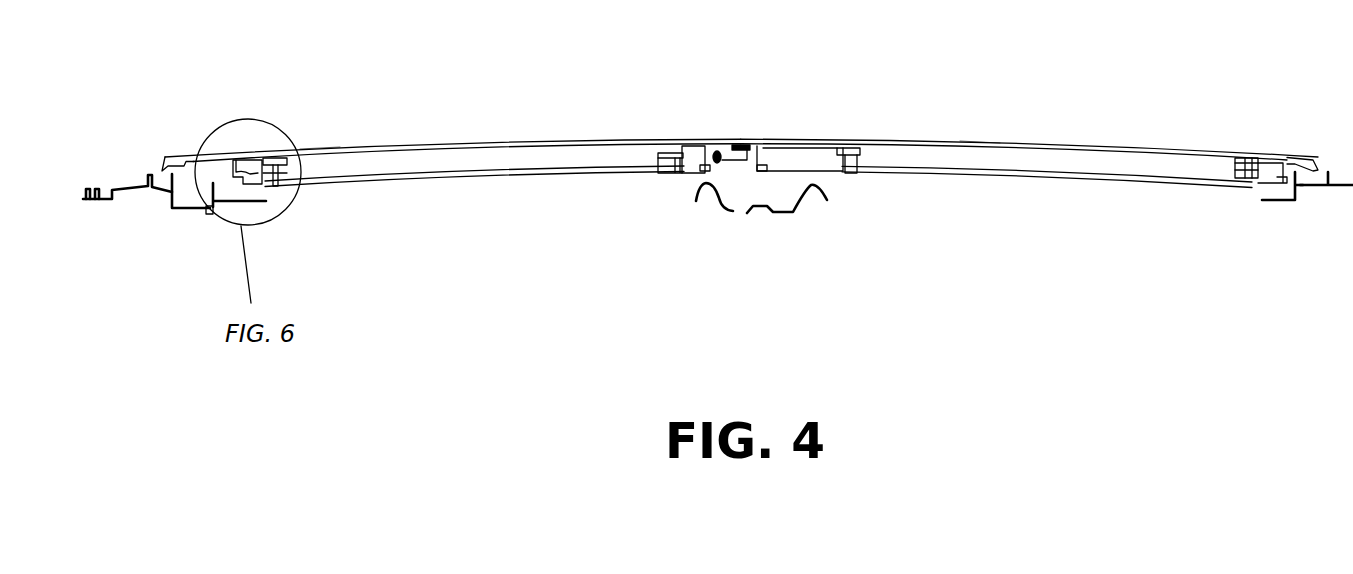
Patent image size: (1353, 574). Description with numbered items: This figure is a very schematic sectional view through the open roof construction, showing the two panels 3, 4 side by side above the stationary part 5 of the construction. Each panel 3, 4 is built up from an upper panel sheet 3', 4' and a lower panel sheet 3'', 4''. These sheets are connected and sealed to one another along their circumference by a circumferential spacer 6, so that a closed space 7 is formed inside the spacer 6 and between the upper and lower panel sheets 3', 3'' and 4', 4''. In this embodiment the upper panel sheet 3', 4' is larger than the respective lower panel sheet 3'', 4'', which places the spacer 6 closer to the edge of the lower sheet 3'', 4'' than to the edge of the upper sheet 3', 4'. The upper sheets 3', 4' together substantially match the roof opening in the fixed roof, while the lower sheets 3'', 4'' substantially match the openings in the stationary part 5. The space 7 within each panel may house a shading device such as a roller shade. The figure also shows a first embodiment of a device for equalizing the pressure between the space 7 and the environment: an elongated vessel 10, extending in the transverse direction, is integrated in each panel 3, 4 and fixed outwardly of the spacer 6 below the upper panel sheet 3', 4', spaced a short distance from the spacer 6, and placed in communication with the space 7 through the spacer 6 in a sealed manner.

The panel 3 is at (451, 138).
The upper panel sheet 3' is at (451, 120).
The lower panel sheet 3'' is at (474, 212).
The panel 4 is at (1029, 142).
The upper panel sheet 4' is at (1029, 120).
The lower panel sheet 4'' is at (1047, 213).
The stationary part 5 is at (187, 213).
The circumferential spacer 6 is at (281, 190).
The space 7 is at (377, 161).
The vessel 10 is at (812, 143).